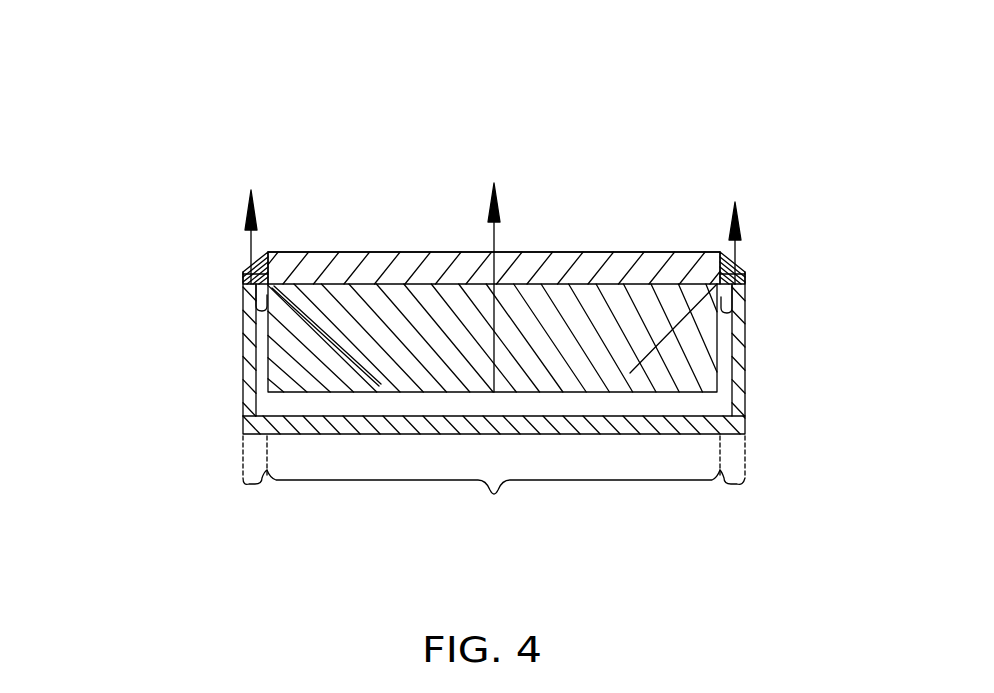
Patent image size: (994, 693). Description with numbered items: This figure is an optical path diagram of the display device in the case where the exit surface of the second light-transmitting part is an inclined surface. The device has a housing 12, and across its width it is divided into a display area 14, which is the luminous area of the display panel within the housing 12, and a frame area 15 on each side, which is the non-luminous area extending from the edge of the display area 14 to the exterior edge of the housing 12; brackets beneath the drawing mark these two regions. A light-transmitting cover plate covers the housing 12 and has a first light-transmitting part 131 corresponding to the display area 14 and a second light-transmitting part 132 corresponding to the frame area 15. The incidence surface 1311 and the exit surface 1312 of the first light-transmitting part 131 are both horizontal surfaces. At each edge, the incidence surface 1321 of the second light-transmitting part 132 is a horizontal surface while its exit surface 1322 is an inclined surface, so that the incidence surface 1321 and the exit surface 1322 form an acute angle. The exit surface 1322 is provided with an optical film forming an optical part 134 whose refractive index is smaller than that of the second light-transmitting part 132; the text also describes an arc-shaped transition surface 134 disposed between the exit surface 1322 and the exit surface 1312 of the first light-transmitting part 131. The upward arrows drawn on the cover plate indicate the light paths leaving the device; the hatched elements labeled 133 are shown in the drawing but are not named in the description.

The housing 12 is at (747, 412).
The first light-transmitting part 131 is at (543, 250).
The incidence surface of the first light-transmitting part 1311 is at (387, 250).
The exit surface of the first light-transmitting part 1312 is at (600, 250).
The second light-transmitting part 132 is at (221, 268).
The incidence surface of the second light-transmitting part 1321 is at (253, 307).
The exit surface of the second light-transmitting part 1322 is at (240, 263).
The inclined surface 133 is at (257, 267).
The optical part 134 is at (267, 260).
The display area 14 is at (493, 512).
The frame area 15 is at (494, 488).